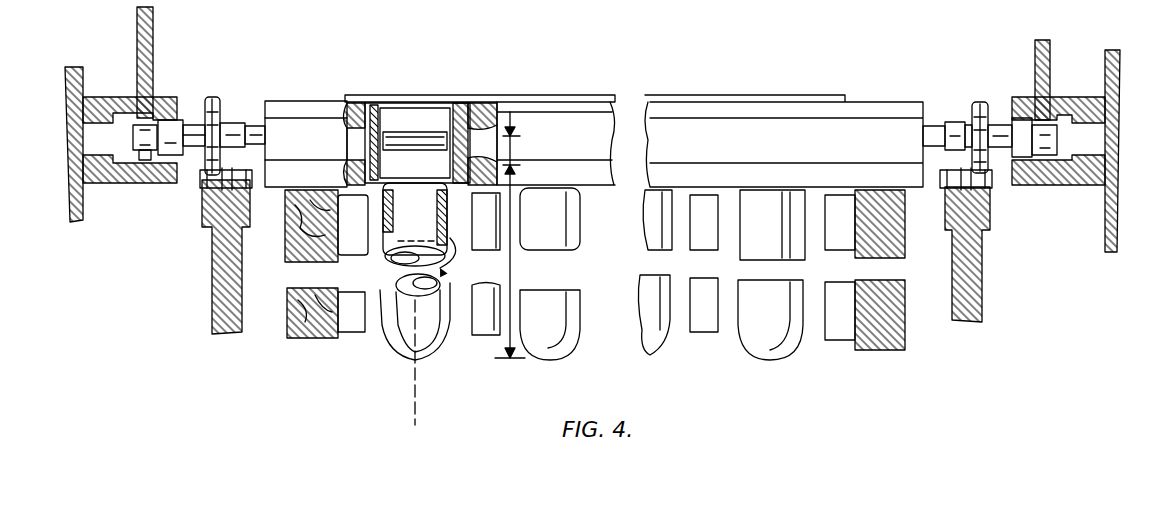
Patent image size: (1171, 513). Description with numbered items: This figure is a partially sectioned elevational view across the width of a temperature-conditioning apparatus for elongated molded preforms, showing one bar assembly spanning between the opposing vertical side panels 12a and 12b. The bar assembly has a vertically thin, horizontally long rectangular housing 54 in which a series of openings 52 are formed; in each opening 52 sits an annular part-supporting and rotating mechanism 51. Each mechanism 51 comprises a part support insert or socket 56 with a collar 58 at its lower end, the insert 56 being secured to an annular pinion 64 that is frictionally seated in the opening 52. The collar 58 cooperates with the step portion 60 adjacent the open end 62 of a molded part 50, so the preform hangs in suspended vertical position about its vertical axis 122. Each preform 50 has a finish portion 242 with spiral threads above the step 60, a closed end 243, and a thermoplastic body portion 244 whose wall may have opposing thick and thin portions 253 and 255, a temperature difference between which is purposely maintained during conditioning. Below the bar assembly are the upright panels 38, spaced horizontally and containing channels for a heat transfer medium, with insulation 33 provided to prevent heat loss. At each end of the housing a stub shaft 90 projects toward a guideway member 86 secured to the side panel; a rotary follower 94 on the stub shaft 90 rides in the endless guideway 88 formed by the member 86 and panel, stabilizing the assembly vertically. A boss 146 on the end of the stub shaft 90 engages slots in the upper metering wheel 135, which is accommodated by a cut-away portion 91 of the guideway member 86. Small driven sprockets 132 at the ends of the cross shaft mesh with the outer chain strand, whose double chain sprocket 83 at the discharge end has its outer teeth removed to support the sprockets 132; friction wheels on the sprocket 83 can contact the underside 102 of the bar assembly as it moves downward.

The vertical side panel 12a is at (1103, 65).
The vertical side panel 12b is at (88, 75).
The insulation 33 is at (318, 338).
The upright panel 38 is at (485, 336).
The elongated molded part 50 is at (443, 348).
The part-supporting and rotating mechanism 51 is at (445, 95).
The opening 52 is at (352, 258).
The housing 54 is at (348, 105).
The part support insert 56 is at (483, 120).
The collar 58 is at (380, 176).
The step portion 60 is at (430, 140).
The open end 62 is at (420, 133).
The annular pinion 64 is at (493, 125).
The sprocket 83 is at (212, 291).
The guideway member 86 is at (103, 96).
The guideway 88 is at (122, 152).
The stub shaft 90 is at (1000, 155).
The cut-away portion 91 is at (152, 108).
The rotary follower 94 is at (172, 125).
The underside of bar assembly 102 is at (275, 195).
The vertical axis 122 is at (413, 388).
The driven sprocket 132 is at (213, 100).
The upper metering wheel 135 is at (153, 32).
The boss 146 is at (143, 182).
The finish portion 242 is at (395, 133).
The closed end 243 is at (386, 343).
The body portion 244 is at (514, 272).
The thick portion 253 is at (385, 214).
The thin portion 255 is at (385, 230).